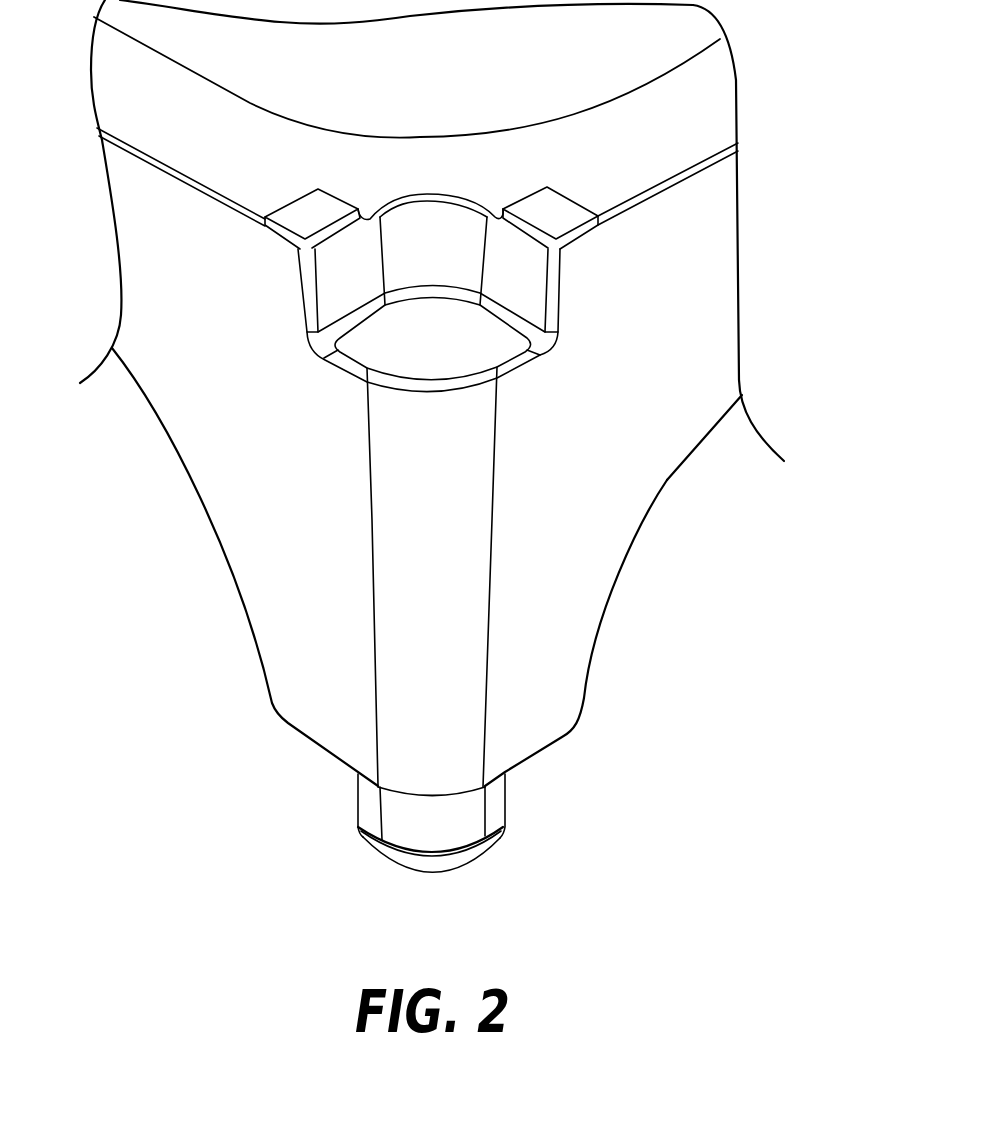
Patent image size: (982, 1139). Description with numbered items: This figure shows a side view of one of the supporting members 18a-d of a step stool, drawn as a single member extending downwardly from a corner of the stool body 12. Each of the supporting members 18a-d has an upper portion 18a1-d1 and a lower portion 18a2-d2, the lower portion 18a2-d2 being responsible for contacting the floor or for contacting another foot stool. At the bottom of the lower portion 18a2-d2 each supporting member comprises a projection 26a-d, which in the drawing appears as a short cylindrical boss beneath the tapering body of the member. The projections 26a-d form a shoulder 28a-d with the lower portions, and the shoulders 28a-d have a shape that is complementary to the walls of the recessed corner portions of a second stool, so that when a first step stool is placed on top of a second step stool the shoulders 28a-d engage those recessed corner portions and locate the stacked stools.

The end cap body 12 is at (442, 97).
The supporting members 18a-d is at (162, 428).
The upper portions of the supporting members 18a1-d1 is at (588, 352).
The lower portions of the supporting members 18a2-d2 is at (554, 672).
The shoulders 28a-d is at (309, 747).
The projections 26a-d is at (518, 808).